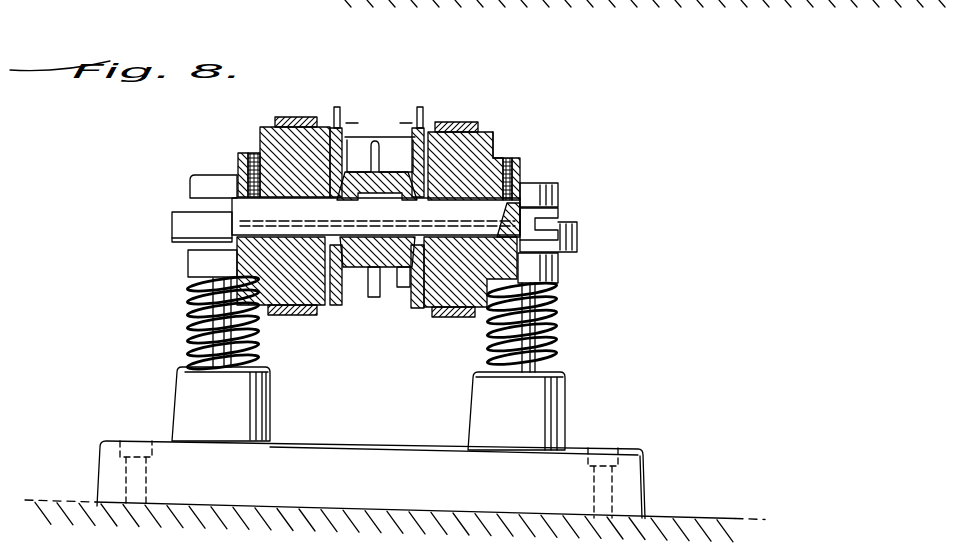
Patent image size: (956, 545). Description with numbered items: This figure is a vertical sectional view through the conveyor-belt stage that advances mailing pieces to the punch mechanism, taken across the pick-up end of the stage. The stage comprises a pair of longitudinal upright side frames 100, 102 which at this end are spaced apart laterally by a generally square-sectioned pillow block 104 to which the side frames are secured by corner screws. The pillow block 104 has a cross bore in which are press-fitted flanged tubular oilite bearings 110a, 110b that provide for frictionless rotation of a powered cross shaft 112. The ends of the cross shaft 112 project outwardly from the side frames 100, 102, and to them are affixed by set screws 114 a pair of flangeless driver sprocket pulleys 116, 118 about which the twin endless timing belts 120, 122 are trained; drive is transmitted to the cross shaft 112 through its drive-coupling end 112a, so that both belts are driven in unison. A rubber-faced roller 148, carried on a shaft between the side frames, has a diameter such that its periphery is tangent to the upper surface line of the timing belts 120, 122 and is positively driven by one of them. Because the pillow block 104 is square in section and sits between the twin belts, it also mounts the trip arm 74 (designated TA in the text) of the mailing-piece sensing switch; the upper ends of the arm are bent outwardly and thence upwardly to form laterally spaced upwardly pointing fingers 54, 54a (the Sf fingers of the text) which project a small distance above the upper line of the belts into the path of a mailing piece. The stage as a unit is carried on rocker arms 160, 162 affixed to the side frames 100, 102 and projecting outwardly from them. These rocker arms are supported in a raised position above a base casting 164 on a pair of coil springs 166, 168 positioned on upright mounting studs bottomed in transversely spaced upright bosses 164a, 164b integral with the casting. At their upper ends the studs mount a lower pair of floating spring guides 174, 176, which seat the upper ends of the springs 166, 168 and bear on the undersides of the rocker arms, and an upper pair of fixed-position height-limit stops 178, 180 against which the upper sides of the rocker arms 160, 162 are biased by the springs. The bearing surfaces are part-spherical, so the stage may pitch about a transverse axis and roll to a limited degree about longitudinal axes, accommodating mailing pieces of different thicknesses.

The contact pin 54 is at (423, 107).
The contact pin 54a is at (337, 108).
The pin 74 is at (374, 292).
The side frame 100 is at (427, 130).
The side frame 102 is at (331, 132).
The pillow block 104 is at (383, 268).
The flanged tubular oilite bearing 110a is at (409, 242).
The flanged tubular oilite bearing 110b is at (347, 245).
The powered cross shaft 112 is at (376, 217).
The drive-coupling end of cross shaft 112a is at (548, 232).
The set screw 114 is at (243, 162).
The driver sprocket pulley 116 is at (493, 143).
The driver sprocket pulley 118 is at (273, 137).
The timing belt 120 is at (472, 155).
The timing belt 122 is at (277, 118).
The rubber-faced roller 148 is at (387, 105).
The rocker arm 160 is at (577, 247).
The rocker arm 162 is at (198, 229).
The base casting 164 is at (372, 428).
The upright boss 164a is at (545, 410).
The upright boss 164b is at (187, 410).
The coil spring 166 is at (560, 345).
The coil spring 168 is at (190, 328).
The floating spring guide 174 is at (560, 279).
The floating spring guide 176 is at (203, 262).
The height-limit stop 178 is at (560, 197).
The height-limit stop 180 is at (191, 187).